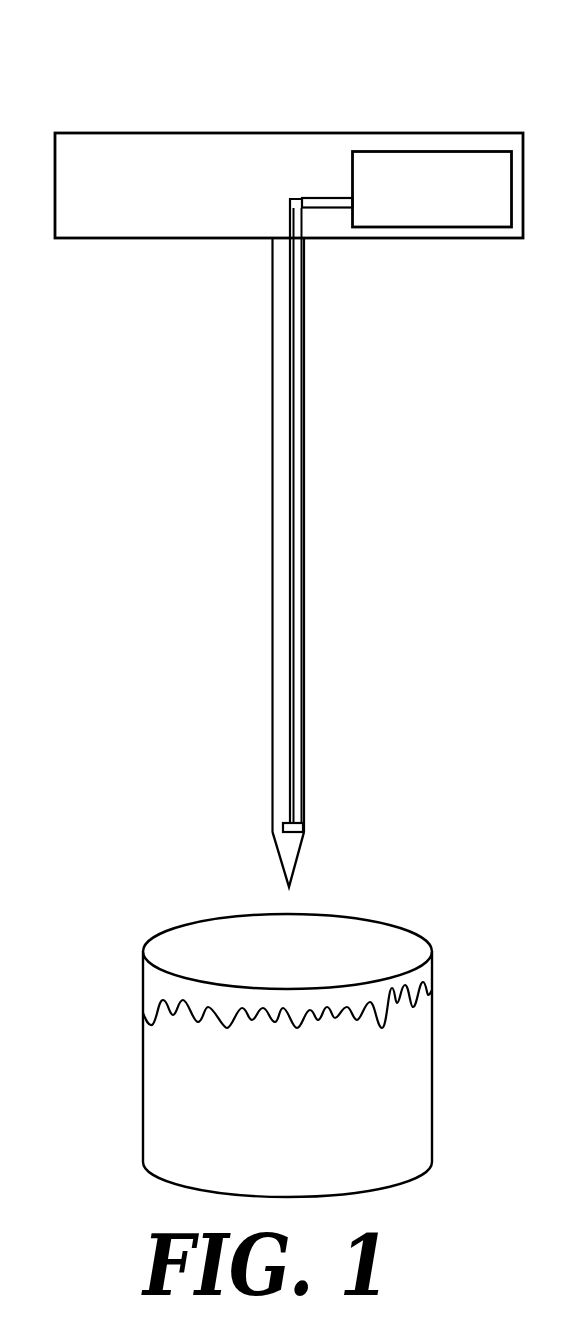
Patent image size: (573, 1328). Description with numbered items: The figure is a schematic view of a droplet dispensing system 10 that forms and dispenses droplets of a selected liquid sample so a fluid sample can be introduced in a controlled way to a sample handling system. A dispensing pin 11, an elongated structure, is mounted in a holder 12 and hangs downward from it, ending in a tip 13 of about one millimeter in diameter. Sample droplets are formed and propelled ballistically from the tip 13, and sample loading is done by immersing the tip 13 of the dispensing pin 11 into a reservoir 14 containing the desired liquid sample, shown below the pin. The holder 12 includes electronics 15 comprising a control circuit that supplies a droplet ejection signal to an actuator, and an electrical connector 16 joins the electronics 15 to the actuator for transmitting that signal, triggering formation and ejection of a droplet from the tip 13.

The droplet dispensing system 10 is at (117, 69).
The dispensing pin 11 is at (272, 437).
The holder 12 is at (222, 194).
The tip 13 is at (269, 878).
The reservoir 14 is at (325, 1102).
The electronics 15 is at (448, 214).
The electrical connector 16 is at (327, 211).